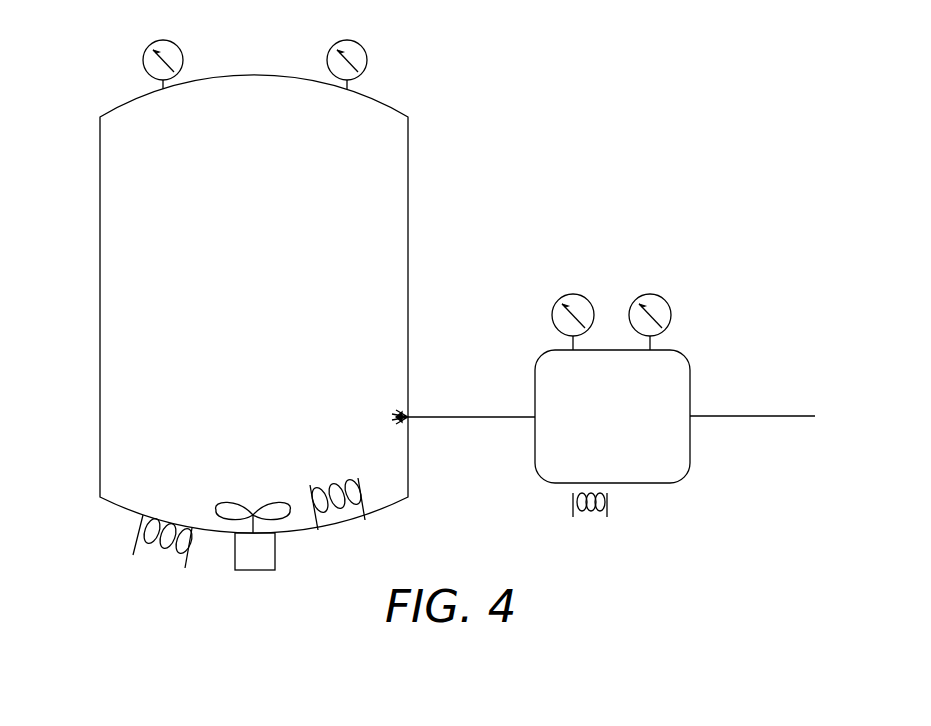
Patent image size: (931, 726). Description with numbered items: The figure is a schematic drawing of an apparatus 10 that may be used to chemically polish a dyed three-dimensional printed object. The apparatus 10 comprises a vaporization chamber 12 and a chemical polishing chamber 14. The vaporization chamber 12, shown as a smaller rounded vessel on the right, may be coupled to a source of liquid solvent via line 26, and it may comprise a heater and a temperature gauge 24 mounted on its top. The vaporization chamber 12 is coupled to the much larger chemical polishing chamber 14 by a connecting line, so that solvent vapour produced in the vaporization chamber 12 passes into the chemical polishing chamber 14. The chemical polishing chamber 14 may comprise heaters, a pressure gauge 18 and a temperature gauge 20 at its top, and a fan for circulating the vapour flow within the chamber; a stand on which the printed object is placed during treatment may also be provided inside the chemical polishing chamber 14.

The apparatus 10 is at (92, 46).
The vaporization chamber 12 is at (461, 417).
The chemical polishing chamber 14 is at (410, 165).
The pressure gauge 18 is at (363, 48).
The temperature gauge 20 is at (179, 49).
The temperature gauge 24 is at (592, 300).
The line 26 is at (747, 416).